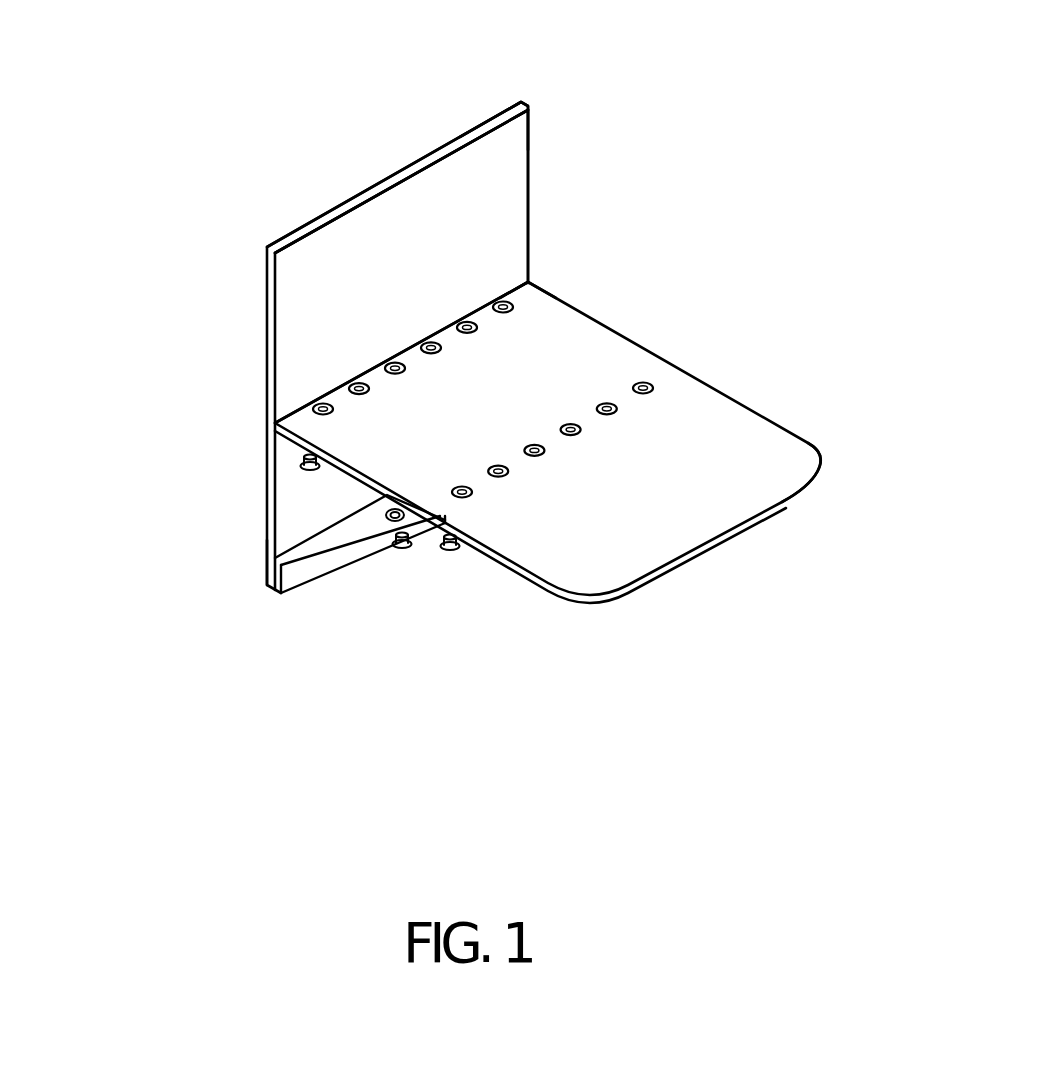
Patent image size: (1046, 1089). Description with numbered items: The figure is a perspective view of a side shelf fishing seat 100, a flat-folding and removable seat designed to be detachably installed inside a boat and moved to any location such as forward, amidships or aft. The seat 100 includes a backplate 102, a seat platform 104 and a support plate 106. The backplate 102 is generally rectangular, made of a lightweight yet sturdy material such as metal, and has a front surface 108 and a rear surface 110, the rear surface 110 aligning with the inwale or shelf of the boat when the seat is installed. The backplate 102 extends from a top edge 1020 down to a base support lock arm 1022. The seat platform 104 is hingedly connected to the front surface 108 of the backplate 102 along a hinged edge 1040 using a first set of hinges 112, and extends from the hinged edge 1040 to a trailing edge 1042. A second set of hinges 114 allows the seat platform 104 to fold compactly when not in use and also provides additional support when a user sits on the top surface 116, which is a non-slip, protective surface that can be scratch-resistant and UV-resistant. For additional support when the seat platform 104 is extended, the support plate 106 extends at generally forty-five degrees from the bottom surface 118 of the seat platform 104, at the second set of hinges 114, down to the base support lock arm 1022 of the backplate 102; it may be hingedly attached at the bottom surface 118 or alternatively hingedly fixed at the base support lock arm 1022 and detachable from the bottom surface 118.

The side shelf fishing seat 100 is at (216, 234).
The backplate 102 is at (361, 341).
The seat platform 104 is at (526, 434).
The support plate 106 is at (382, 550).
The front surface 108 is at (488, 213).
The rear surface 110 is at (336, 183).
The first set of hinges 112 is at (275, 423).
The second set of hinges 114 is at (645, 385).
The top surface 116 is at (724, 462).
The bottom surface 118 is at (671, 600).
The top edge 1020 is at (481, 127).
The base support lock arm 1022 is at (309, 584).
The hinged edge 1040 is at (530, 286).
The trailing edge 1042 is at (792, 504).